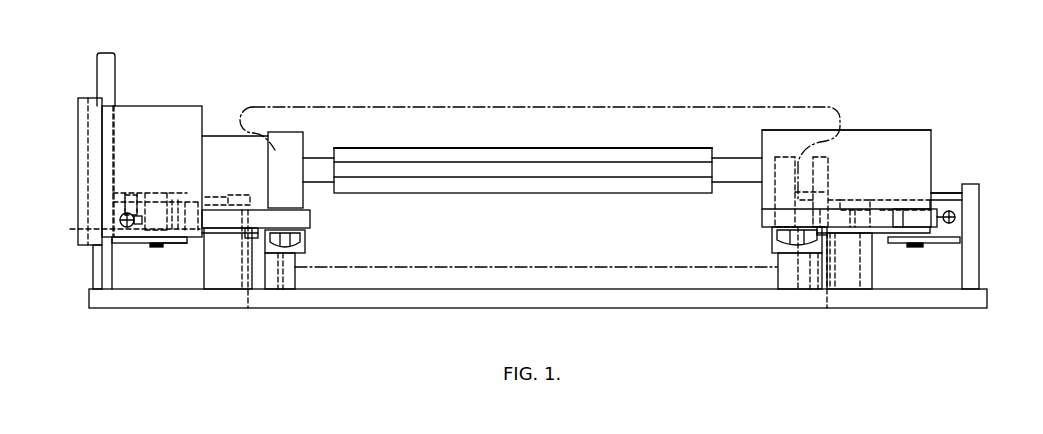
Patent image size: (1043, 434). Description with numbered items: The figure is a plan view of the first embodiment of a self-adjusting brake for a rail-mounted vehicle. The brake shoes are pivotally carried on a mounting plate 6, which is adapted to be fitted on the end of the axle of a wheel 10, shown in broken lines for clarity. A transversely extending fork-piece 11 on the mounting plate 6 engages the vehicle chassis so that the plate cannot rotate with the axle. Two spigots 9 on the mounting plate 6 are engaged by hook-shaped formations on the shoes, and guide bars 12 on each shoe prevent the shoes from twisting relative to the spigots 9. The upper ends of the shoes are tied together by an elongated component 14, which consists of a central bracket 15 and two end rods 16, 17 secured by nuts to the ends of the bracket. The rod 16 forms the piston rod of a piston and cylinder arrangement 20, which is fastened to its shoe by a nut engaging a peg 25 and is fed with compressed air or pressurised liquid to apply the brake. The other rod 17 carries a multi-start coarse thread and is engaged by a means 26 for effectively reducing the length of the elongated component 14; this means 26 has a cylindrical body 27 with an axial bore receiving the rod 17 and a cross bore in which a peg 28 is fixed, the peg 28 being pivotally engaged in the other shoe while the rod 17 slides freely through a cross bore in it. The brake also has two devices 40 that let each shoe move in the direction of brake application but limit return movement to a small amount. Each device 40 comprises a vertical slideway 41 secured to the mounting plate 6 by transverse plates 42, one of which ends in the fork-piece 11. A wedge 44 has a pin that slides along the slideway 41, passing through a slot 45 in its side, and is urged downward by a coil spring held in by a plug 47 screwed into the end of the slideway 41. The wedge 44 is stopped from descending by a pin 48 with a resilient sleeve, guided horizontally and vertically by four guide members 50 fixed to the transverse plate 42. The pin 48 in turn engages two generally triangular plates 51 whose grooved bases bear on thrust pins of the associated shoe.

The mounting plate 6 is at (538, 318).
The spigots 9 is at (275, 275).
The wheel 10 is at (790, 105).
The fork-piece 11 is at (100, 63).
The guide bars 12 is at (210, 280).
The elongated component 14 is at (596, 145).
The central bracket 15 is at (655, 157).
The rod 16 is at (315, 165).
The rod 17 is at (740, 165).
The piston and cylinder arrangement 20 is at (160, 98).
The peg 25 is at (305, 252).
The means for reducing the length of the elongated component 26 is at (912, 122).
The cylindrical body 27 is at (847, 133).
The peg 28 is at (773, 247).
The devices 40 is at (152, 270).
The vertical slideway 41 is at (985, 198).
The transverse plates 42 is at (102, 264).
The wedge 44 is at (145, 200).
The slot 45 is at (132, 230).
The plug 47 is at (120, 217).
The pin 48 is at (913, 247).
The guide members 50 is at (177, 240).
The triangular plates 51 is at (237, 197).